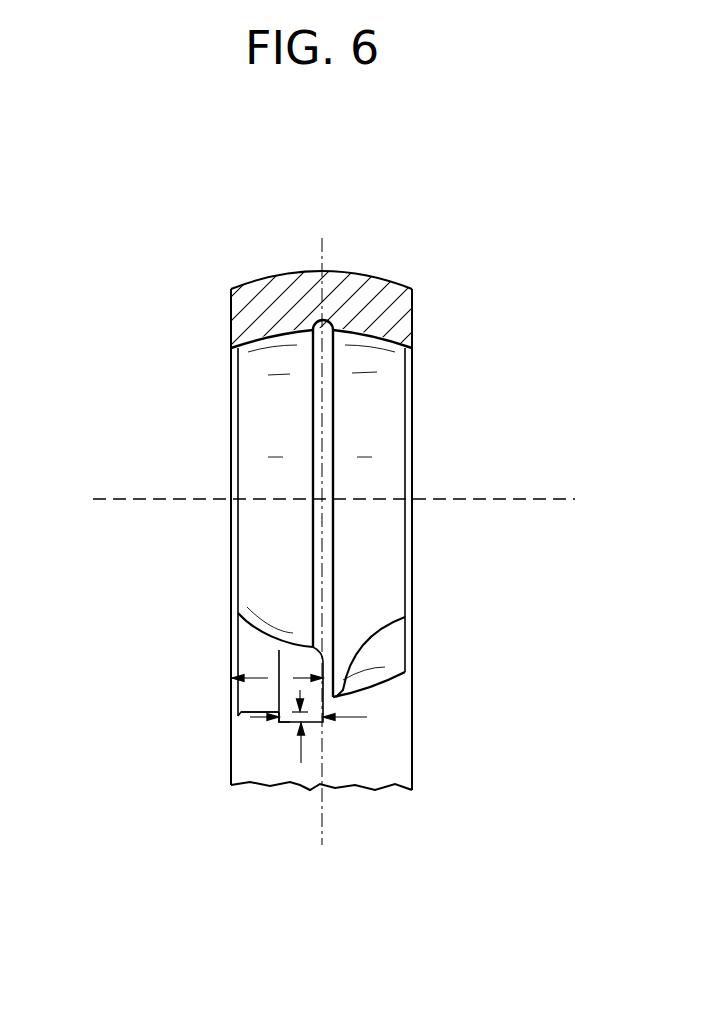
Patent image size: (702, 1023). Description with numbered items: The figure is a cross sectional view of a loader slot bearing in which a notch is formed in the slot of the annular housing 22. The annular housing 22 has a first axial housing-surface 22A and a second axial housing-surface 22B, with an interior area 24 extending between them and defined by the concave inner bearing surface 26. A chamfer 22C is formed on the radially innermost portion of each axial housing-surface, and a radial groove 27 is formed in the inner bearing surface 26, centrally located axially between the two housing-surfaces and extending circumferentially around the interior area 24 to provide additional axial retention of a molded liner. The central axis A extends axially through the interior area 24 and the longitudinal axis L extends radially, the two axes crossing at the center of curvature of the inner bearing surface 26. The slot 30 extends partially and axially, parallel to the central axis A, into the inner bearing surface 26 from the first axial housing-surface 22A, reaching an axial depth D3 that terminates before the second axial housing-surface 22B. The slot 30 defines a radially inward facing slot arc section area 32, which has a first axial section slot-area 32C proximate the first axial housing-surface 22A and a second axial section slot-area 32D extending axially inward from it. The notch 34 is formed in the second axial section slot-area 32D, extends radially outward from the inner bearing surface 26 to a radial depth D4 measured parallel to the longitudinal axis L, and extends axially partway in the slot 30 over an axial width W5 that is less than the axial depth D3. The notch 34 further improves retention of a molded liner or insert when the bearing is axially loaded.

The annular housing 22 is at (278, 303).
The first axial housing-surface 22A is at (231, 312).
The second axial housing-surface 22B is at (412, 306).
The chamfer 22C is at (231, 350).
The interior area 24 is at (262, 445).
The inner bearing surface 26 is at (272, 334).
The radial groove 27 is at (327, 425).
The slot 30 is at (229, 693).
The slot arc section area 32 is at (253, 642).
The first axial section slot-area 32C is at (245, 700).
The second axial section slot-area 32D is at (404, 617).
The notch 34 is at (285, 706).
The central axis A is at (103, 498).
The longitudinal axis L is at (325, 797).
The axial depth D3 is at (262, 678).
The radial depth D4 is at (301, 763).
The axial width W5 is at (367, 717).